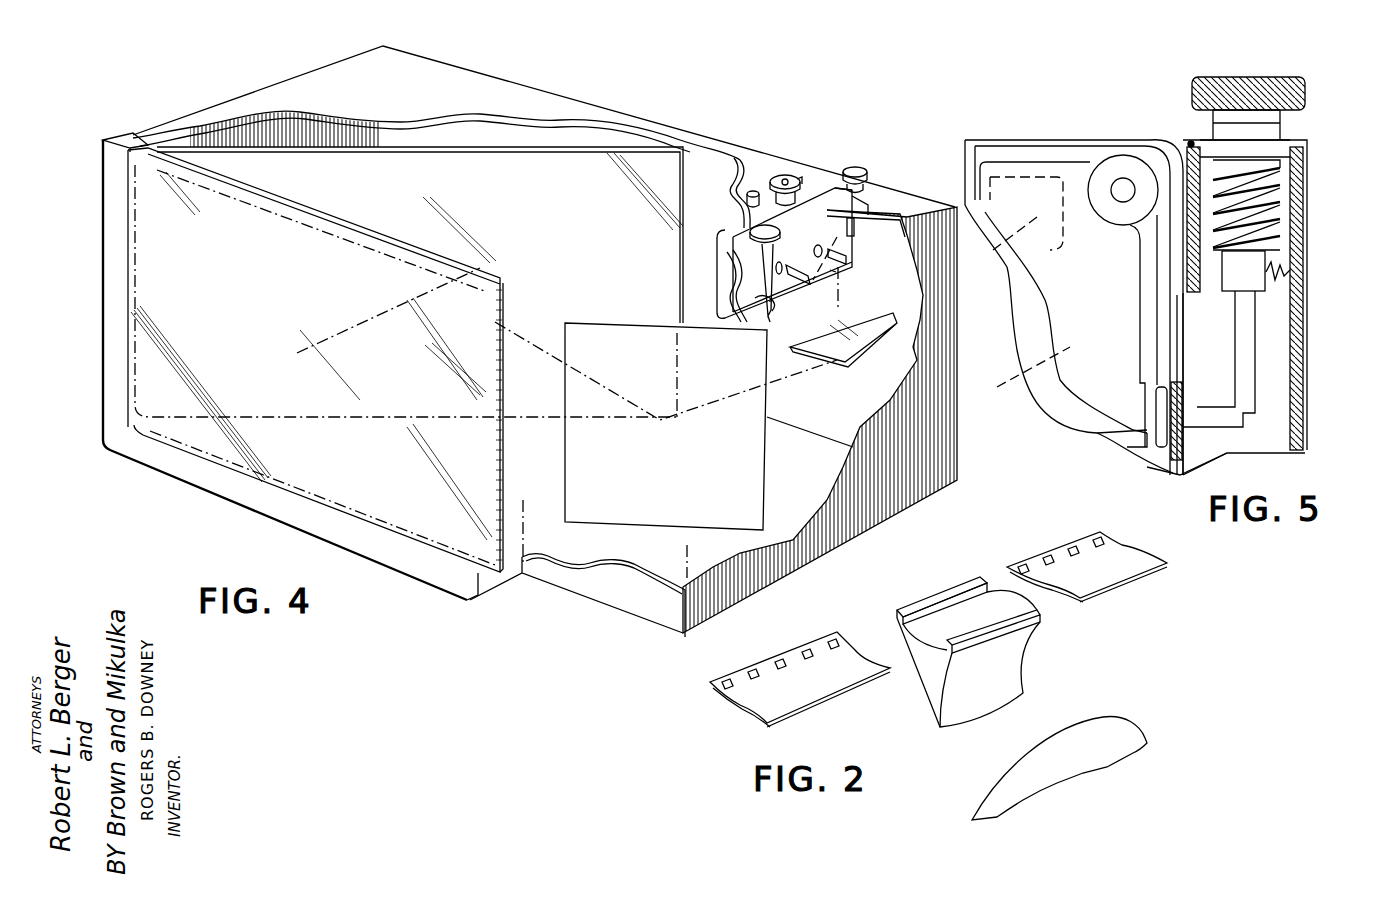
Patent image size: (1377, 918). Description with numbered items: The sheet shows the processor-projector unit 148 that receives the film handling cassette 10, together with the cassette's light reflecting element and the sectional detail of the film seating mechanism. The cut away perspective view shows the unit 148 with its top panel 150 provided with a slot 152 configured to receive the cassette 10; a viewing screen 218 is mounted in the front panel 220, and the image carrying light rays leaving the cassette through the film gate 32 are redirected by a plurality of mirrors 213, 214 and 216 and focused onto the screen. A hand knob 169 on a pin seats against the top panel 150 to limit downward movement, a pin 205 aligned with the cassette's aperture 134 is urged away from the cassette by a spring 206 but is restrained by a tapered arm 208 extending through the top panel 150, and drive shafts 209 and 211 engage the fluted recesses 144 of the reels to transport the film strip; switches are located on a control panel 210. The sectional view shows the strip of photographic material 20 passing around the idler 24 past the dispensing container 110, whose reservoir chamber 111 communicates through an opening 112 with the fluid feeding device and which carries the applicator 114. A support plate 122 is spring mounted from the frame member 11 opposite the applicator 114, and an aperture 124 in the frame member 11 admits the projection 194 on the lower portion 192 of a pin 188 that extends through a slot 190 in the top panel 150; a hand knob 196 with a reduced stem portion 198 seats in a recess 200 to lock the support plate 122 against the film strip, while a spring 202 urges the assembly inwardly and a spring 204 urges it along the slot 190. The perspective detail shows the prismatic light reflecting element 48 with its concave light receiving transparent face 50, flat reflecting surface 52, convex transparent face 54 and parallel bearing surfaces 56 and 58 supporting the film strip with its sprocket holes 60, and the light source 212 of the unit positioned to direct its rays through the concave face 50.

In FIG. 4, the cassette 10 is at (823, 195).
In FIG. 5, the cassette 10 is at (1185, 313).
In FIG. 5, the frame member 11 is at (1178, 340).
In FIG. 5, the strip of photographic material 20 is at (1028, 152).
In FIG. 2, the strip of photographic material 20 is at (848, 643).
In FIG. 5, the idler 24 is at (1098, 168).
In FIG. 4, the film gate 32 is at (850, 282).
In FIG. 2, the light reflecting element 48 is at (1025, 666).
In FIG. 2, the concave light receiving transparent face 50 is at (1010, 682).
In FIG. 2, the flat reflecting surface 52 is at (920, 672).
In FIG. 2, the convex transparent face 54 is at (968, 600).
In FIG. 2, the bearing surface 56 is at (952, 592).
In FIG. 2, the bearing surface 58 is at (1028, 626).
In FIG. 2, the sprocket holes 60 is at (808, 650).
In FIG. 5, the dispensing container 110 is at (1043, 307).
In FIG. 5, the reservoir chamber 111 is at (1026, 381).
In FIG. 5, the opening 112 is at (1066, 339).
In FIG. 5, the applicator 114 is at (1153, 423).
In FIG. 5, the support plate 122 is at (1152, 398).
In FIG. 5, the aperture 124 is at (1187, 413).
In FIG. 4, the aperture 134 is at (737, 233).
In FIG. 4, the fluted recess 144 is at (804, 257).
In FIG. 4, the processor-projector unit 148 is at (660, 113).
In FIG. 5, the processor-projector unit 148 is at (1306, 158).
In FIG. 4, the top panel 150 is at (505, 86).
In FIG. 5, the top panel 150 is at (1298, 138).
In FIG. 4, the slot 152 is at (866, 198).
In FIG. 4, the hand knob 169 is at (785, 174).
In FIG. 4, the pin 188 is at (890, 210).
In FIG. 5, the pin 188 is at (1304, 192).
In FIG. 5, the slot 190 is at (1188, 142).
In FIG. 5, the lower portion 192 is at (1248, 347).
In FIG. 4, the projection 194 is at (856, 233).
In FIG. 5, the projection 194 is at (1220, 422).
In FIG. 4, the hand knob 196 is at (856, 165).
In FIG. 5, the hand knob 196 is at (1282, 76).
In FIG. 5, the reduced stem portion 198 is at (1296, 112).
In FIG. 5, the recess 200 is at (1189, 142).
In FIG. 5, the spring 202 is at (1272, 222).
In FIG. 5, the spring 204 is at (1292, 268).
In FIG. 4, the pin 205 is at (752, 260).
In FIG. 4, the spring 206 is at (758, 284).
In FIG. 4, the tapered arm 208 is at (771, 312).
In FIG. 4, the drive shaft 209 is at (850, 259).
In FIG. 4, the control panel 210 is at (646, 611).
In FIG. 4, the drive shaft 211 is at (800, 264).
In FIG. 4, the mirror 213 is at (838, 364).
In FIG. 4, the mirror 214 is at (750, 475).
In FIG. 4, the mirror 216 is at (478, 153).
In FIG. 4, the viewing screen 218 is at (254, 456).
In FIG. 4, the front panel 220 is at (103, 352).
In FIG. 2, the light source 212 is at (1122, 735).